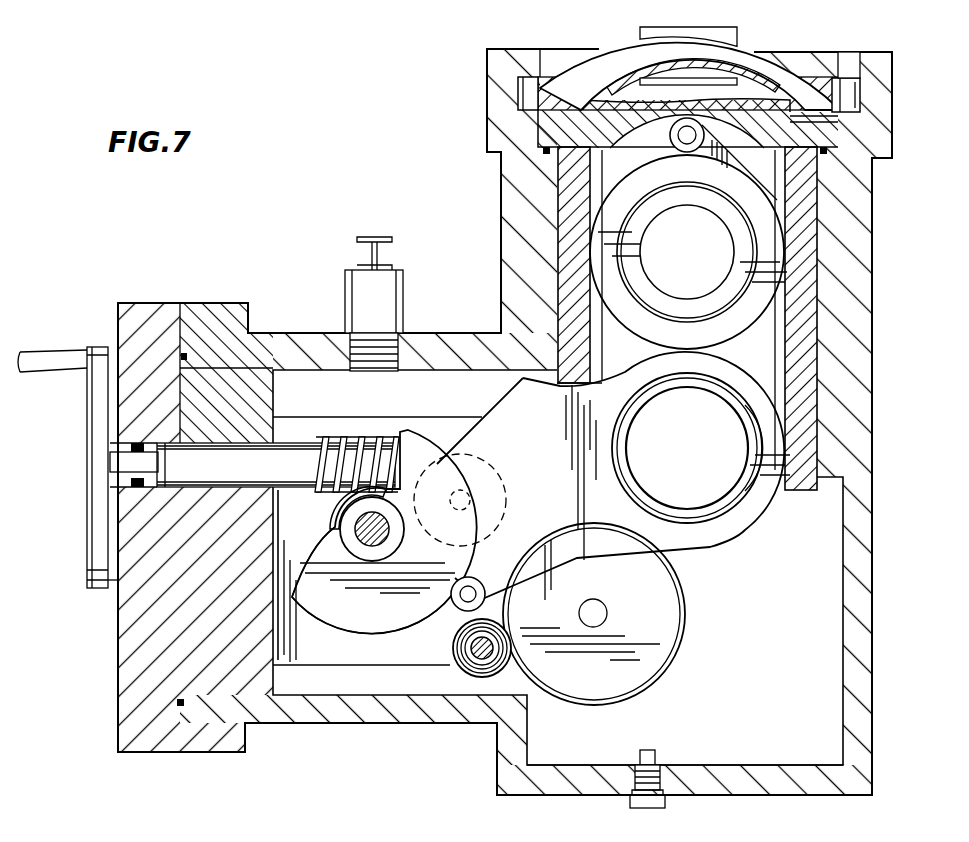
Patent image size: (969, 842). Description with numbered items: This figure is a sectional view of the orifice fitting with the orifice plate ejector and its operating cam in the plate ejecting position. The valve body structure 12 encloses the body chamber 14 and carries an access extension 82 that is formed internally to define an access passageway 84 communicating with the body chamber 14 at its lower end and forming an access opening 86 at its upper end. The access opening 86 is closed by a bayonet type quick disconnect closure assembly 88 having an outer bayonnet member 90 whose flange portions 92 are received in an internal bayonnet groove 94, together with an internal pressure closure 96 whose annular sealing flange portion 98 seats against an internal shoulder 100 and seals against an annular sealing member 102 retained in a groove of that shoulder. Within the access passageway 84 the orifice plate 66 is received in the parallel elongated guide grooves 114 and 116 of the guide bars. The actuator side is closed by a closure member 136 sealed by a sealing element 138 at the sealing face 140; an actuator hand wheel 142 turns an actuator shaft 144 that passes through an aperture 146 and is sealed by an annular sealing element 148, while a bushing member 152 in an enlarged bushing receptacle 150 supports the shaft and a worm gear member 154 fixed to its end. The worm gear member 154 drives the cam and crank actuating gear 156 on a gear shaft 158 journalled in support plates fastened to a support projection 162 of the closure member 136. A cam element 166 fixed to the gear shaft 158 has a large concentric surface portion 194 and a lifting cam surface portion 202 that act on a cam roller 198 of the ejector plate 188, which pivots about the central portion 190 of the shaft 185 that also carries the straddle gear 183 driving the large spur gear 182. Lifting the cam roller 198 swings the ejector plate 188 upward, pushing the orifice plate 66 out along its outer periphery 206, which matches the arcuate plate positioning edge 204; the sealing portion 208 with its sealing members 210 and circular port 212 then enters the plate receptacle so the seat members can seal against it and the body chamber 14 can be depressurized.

The valve body structure 12 is at (870, 480).
The body chamber 14 is at (801, 676).
The orifice plate 66 is at (612, 244).
The access extension 82 is at (513, 167).
The access passageway 84 is at (760, 166).
The access opening 86 is at (567, 57).
The closure assembly 88 is at (748, 42).
The outer bayonnet member 90 is at (625, 50).
The flange portions 92 is at (525, 78).
The internal bayonnet groove 94 is at (856, 78).
The internal pressure closure 96 is at (707, 122).
The annular sealing flange portion 98 is at (832, 128).
The internal shoulder 100 is at (826, 148).
The annular sealing member 102 is at (540, 132).
The elongated guide groove 114 is at (576, 195).
The elongated guide groove 116 is at (800, 222).
The closure member 136 is at (140, 658).
The sealing element 138 is at (178, 702).
The sealing face 140 is at (180, 305).
The actuator hand wheel 142 is at (88, 545).
The actuator shaft 144 is at (115, 462).
The aperture 146 is at (130, 483).
The annular sealing element 148 is at (136, 442).
The bushing receptacle 150 is at (200, 468).
The bushing member 152 is at (165, 487).
The worm gear member 154 is at (337, 438).
The cam and crank actuating gear 156 is at (336, 512).
The gear shaft 158 is at (342, 538).
The support projection 162 is at (387, 420).
The cam element 166 is at (328, 605).
The large spur gear 182 is at (658, 672).
The straddle gear 183 is at (470, 676).
The shaft 185 is at (482, 660).
The ejector plate 188 is at (545, 384).
The central portion 190 is at (474, 470).
The large concentric surface portion 194 is at (367, 632).
The cam roller 198 is at (486, 588).
The lifting cam surface portion 202 is at (356, 540).
The plate positioning edge 204 is at (535, 366).
The outer periphery 206 is at (777, 330).
The sealing portion 208 is at (762, 492).
The sealing members 210 is at (737, 513).
The circular port 212 is at (688, 503).